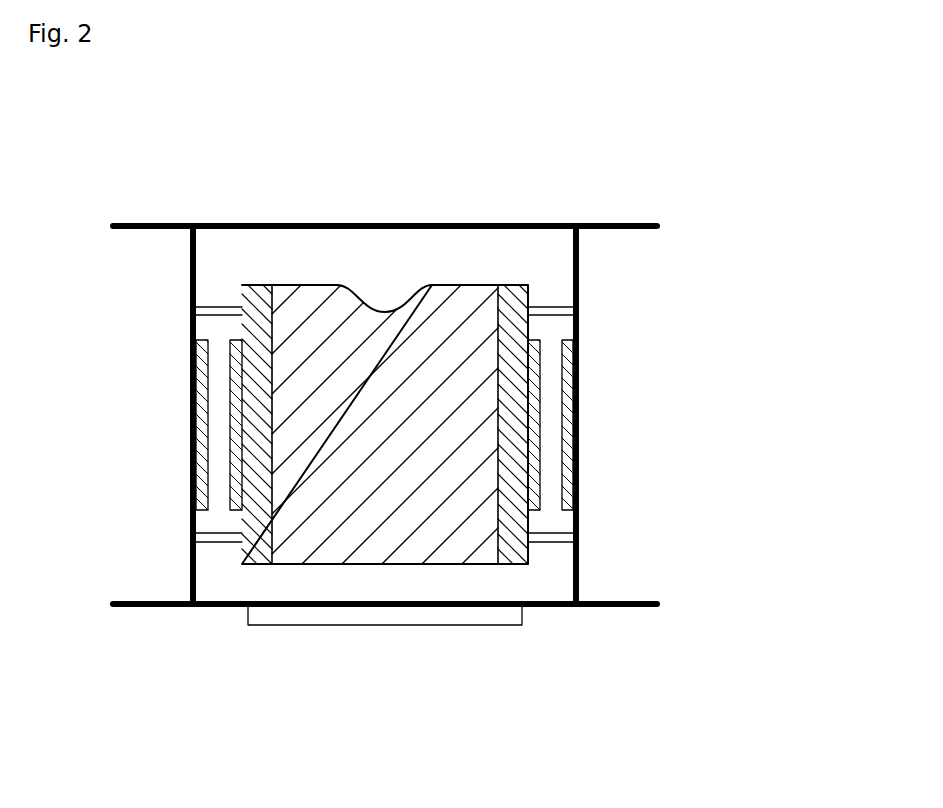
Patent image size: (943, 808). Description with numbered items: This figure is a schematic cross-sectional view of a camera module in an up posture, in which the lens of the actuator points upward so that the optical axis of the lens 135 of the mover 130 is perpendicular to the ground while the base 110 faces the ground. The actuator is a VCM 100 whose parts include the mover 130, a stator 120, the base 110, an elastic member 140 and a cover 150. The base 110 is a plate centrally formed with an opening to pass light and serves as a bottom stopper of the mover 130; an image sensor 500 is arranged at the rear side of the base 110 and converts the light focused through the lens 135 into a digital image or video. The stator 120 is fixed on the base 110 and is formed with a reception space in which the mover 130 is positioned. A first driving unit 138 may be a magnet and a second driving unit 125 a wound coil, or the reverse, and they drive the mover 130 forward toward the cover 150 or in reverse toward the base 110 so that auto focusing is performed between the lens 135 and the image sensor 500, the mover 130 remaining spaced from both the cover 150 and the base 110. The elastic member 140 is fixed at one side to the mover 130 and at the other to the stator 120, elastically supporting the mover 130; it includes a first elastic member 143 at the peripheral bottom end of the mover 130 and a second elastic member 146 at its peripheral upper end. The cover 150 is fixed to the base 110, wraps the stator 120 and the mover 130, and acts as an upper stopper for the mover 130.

The VCM 100 is at (600, 171).
The base 110 is at (190, 608).
The stator 120 is at (190, 337).
The second driving unit 125 is at (196, 404).
The mover 130 is at (420, 276).
The lens 135 is at (345, 300).
The first driving unit 138 is at (233, 490).
The elastic member 140 is at (662, 307).
The first elastic member 143 is at (560, 540).
The second elastic member 146 is at (560, 312).
The cover 150 is at (243, 221).
The image sensor 500 is at (325, 617).